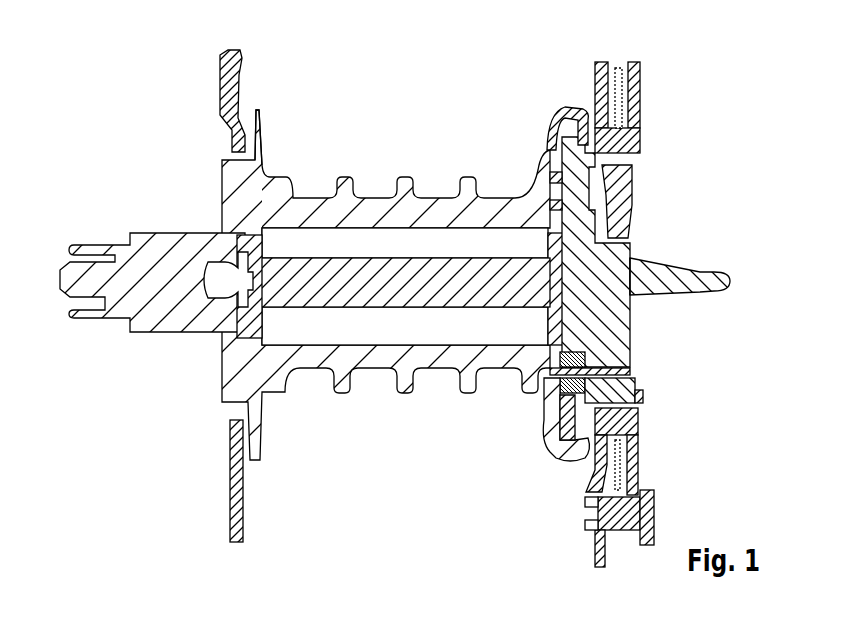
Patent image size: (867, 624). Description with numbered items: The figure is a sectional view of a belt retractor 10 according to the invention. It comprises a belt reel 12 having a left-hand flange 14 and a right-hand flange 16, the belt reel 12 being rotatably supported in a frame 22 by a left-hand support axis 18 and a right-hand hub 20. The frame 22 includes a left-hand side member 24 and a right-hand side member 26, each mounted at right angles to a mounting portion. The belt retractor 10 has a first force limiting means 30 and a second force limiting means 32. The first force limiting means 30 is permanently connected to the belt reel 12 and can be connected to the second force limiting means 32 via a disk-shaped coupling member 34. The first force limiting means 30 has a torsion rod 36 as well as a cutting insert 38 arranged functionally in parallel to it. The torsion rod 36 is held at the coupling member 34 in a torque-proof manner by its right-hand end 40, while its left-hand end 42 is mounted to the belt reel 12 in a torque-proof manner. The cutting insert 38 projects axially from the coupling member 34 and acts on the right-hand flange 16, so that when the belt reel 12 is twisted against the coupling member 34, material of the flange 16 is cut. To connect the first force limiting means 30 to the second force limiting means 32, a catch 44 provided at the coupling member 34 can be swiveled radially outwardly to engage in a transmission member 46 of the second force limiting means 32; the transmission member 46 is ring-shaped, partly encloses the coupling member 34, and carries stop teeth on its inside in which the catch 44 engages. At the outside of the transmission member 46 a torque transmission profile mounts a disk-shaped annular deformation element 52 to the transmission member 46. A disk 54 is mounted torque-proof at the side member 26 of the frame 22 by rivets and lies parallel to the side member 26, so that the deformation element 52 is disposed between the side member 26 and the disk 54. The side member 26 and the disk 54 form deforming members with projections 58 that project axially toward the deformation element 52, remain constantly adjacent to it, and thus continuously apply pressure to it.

The belt retractor 10 is at (686, 52).
The belt reel 12 is at (428, 203).
The left-hand flange 14 is at (262, 125).
The right-hand flange 16 is at (551, 146).
The left-hand support axis 18 is at (195, 335).
The right-hand hub 20 is at (705, 295).
The frame 22 is at (230, 485).
The left-hand side member 24 is at (220, 72).
The right-hand side member 26 is at (598, 69).
The first force limiting means 30 is at (682, 255).
The second force limiting means 32 is at (680, 116).
The coupling member 34 is at (633, 295).
The torsion rod 36 is at (368, 262).
The cutting insert 38 is at (540, 384).
The right-hand end 40 is at (598, 290).
The left-hand end 42 is at (223, 235).
The catch 44 is at (620, 202).
The transmission member 46 is at (640, 147).
The deformation element 52 is at (620, 108).
The disk 54 is at (635, 62).
The projections 58 is at (612, 492).